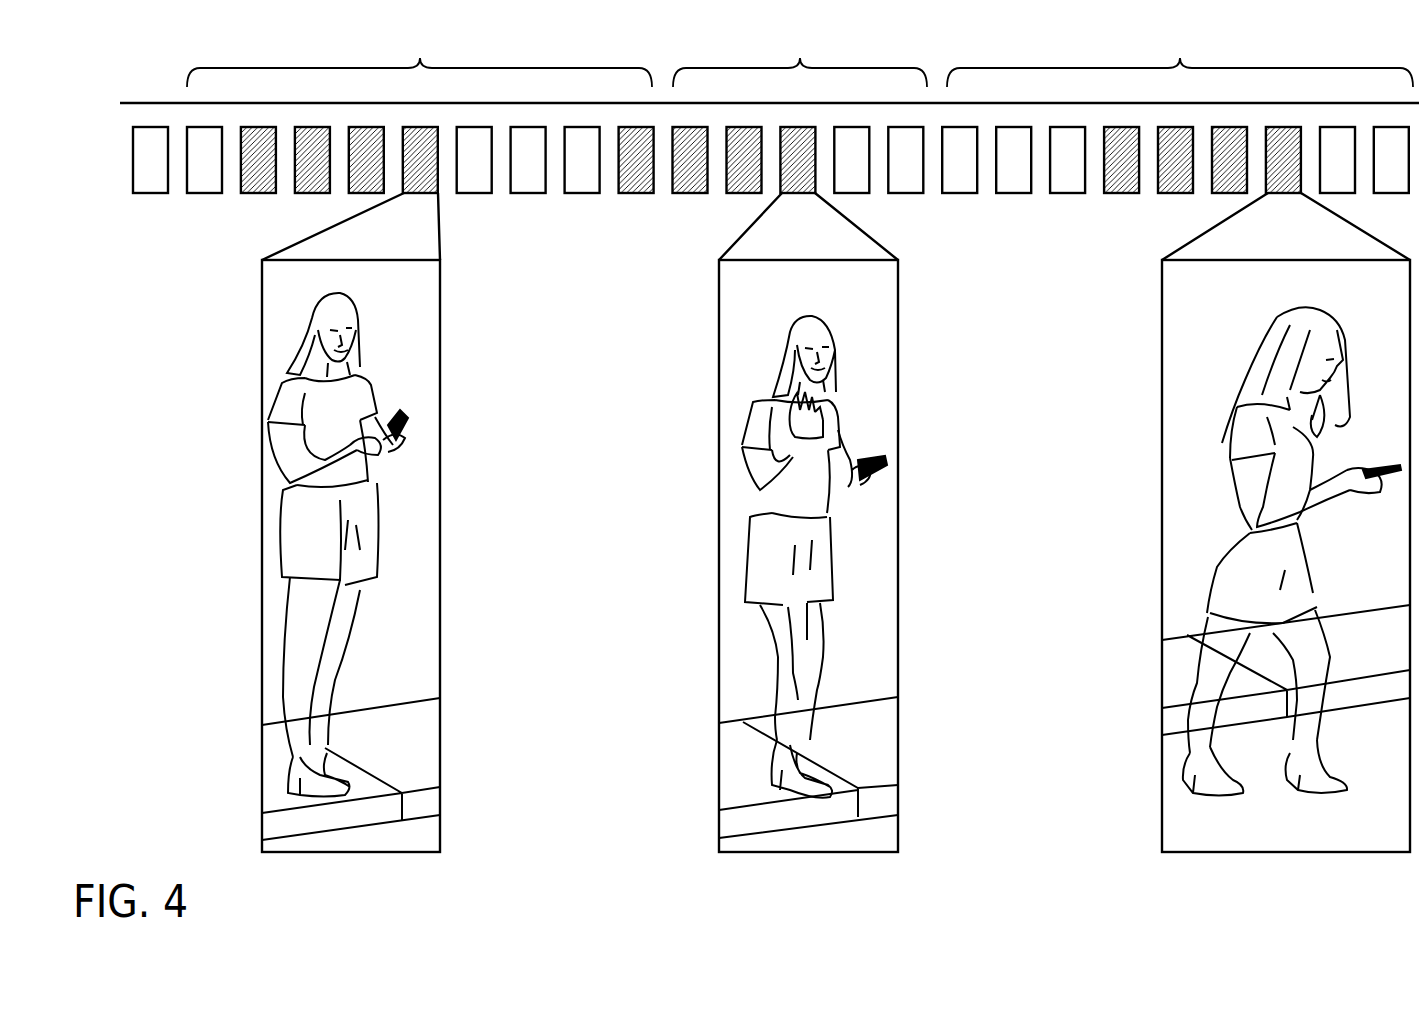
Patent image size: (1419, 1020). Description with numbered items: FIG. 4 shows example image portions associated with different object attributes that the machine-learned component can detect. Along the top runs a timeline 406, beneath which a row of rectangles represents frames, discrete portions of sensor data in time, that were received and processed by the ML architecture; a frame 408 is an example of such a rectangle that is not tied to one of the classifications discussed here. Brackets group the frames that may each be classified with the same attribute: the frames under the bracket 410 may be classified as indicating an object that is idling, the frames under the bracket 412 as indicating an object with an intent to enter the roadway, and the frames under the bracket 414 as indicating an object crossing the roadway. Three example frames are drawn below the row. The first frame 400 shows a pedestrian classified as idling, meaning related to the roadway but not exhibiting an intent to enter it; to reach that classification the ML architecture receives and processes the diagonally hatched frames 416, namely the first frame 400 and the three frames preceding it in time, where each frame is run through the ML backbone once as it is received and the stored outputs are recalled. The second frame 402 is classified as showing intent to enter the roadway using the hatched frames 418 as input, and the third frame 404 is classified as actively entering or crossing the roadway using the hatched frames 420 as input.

The first frame 400 is at (257, 413).
The second frame 402 is at (700, 410).
The third frame 404 is at (1138, 404).
The timeline 406 is at (167, 102).
The frame 408 is at (742, 185).
The bracket 410 is at (419, 60).
The bracket 412 is at (800, 60).
The bracket 414 is at (1180, 60).
The frames 416 is at (303, 214).
The frames 418 is at (682, 215).
The frames 420 is at (1127, 212).